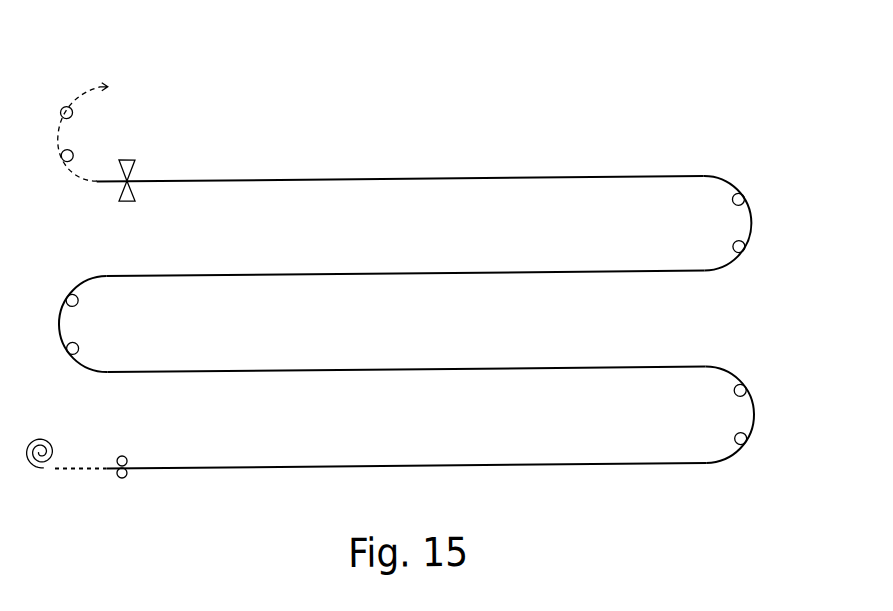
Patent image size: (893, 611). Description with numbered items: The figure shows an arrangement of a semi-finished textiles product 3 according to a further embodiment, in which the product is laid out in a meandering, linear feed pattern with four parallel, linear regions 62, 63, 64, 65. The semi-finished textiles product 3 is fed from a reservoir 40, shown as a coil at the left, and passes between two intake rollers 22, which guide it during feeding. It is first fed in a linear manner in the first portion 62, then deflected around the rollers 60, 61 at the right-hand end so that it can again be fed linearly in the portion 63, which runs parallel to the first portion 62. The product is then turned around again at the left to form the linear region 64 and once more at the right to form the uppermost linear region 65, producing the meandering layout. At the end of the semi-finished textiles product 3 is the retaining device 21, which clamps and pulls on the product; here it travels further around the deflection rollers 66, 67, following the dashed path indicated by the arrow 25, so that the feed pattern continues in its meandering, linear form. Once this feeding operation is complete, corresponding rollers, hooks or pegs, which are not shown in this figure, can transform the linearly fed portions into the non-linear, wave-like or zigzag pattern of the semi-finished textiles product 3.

The semi-finished textiles product 3 is at (403, 317).
The retaining device 21 is at (128, 158).
The intake rollers 22 is at (122, 477).
The flow direction 25 is at (90, 85).
The reservoir 40 is at (34, 434).
The roller 60 is at (746, 440).
The roller 61 is at (746, 393).
The first portion 62 is at (506, 464).
The portion 63 is at (545, 369).
The linear region 64 is at (562, 274).
The linear region 65 is at (643, 179).
The deflection roller 66 is at (66, 157).
The deflection roller 67 is at (68, 104).